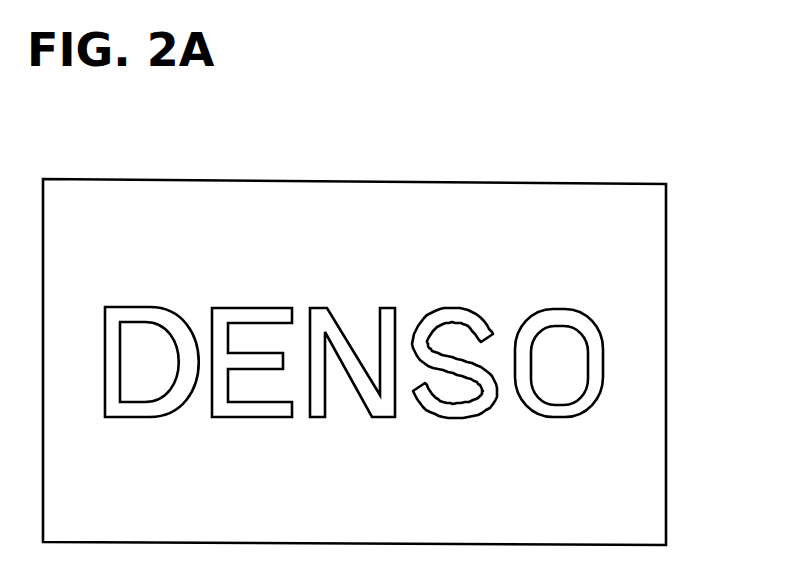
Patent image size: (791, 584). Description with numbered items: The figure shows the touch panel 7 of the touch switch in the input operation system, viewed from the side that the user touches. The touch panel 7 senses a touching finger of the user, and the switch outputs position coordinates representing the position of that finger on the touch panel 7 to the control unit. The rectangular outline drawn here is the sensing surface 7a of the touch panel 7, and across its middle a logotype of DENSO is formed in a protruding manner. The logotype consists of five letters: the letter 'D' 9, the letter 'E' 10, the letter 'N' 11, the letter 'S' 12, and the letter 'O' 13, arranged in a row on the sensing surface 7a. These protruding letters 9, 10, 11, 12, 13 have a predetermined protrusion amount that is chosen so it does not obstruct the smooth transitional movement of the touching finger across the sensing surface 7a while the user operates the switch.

The touch panel 7 is at (665, 365).
The sensing surface 7a is at (647, 476).
The letter 'D' 9 is at (137, 417).
The letter 'E' 10 is at (248, 417).
The letter 'N' 11 is at (383, 417).
The letter 'S' 12 is at (455, 418).
The letter 'O' 13 is at (557, 418).